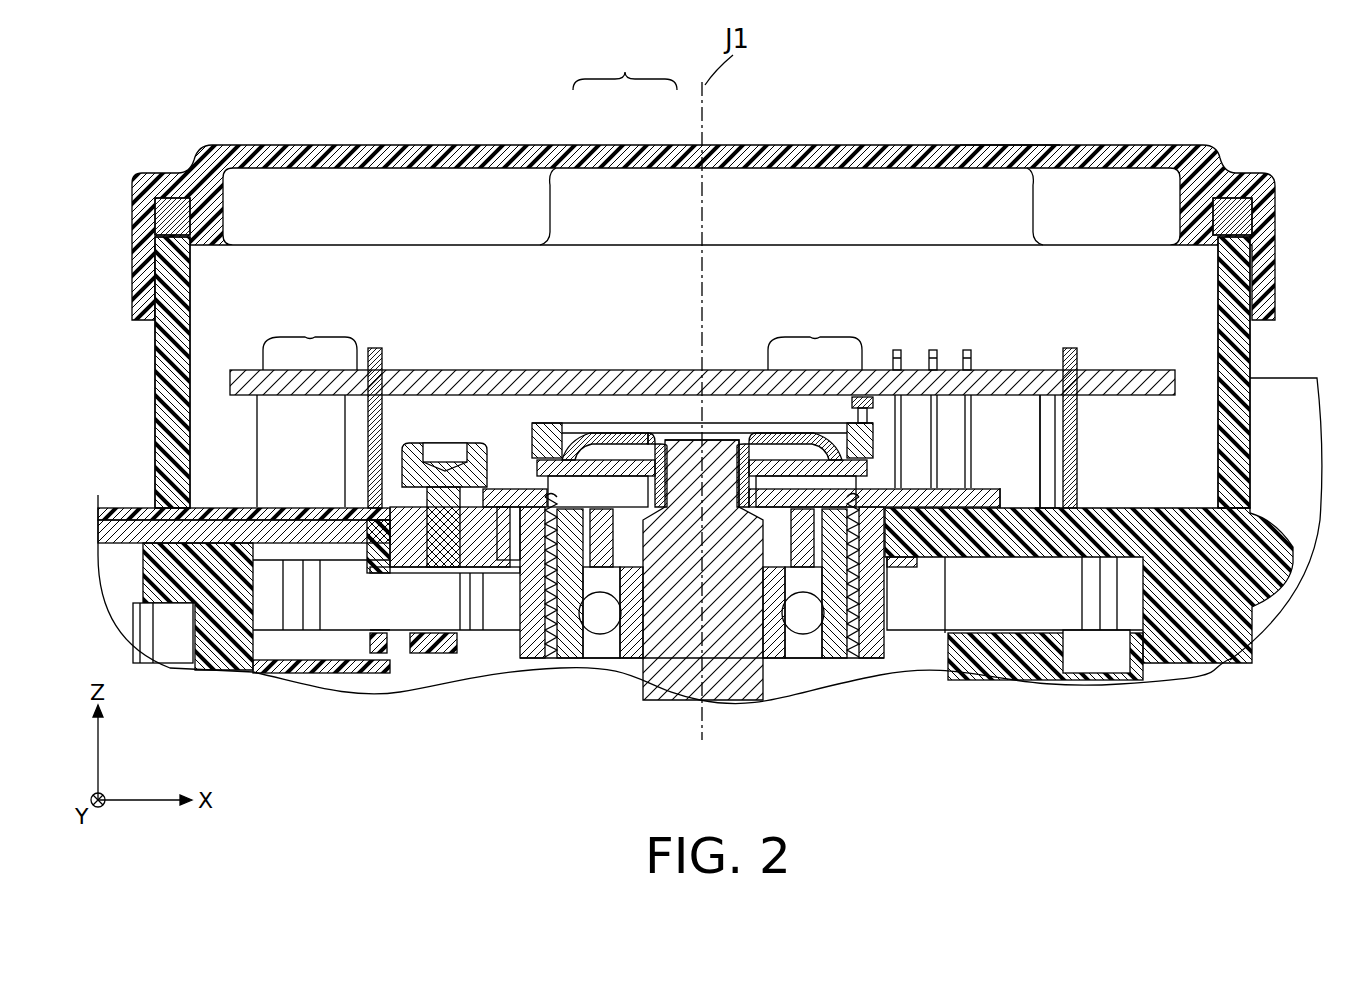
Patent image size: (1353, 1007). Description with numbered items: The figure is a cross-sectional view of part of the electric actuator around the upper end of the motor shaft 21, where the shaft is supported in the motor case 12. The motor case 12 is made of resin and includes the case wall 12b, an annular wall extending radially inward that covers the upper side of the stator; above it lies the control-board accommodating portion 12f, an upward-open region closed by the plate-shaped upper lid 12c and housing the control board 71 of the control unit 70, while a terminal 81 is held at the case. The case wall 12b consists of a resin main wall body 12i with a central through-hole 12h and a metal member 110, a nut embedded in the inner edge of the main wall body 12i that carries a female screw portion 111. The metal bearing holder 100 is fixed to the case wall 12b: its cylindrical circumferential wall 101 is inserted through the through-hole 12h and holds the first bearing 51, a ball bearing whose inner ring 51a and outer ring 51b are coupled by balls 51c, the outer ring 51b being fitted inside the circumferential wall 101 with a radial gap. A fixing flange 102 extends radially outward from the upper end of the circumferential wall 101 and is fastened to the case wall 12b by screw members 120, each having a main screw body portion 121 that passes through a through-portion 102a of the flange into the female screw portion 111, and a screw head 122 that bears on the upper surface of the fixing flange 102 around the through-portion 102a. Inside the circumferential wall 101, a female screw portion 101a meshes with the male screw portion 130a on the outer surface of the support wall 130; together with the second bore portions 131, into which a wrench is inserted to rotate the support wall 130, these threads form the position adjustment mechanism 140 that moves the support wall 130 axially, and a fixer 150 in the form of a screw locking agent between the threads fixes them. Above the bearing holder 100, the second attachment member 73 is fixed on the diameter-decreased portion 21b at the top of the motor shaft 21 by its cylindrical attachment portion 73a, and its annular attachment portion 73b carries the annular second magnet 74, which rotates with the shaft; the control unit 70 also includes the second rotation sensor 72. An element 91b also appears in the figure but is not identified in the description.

The motor case 12 is at (1213, 655).
The case wall 12b is at (1048, 600).
The upper lid 12c is at (1012, 150).
The control-board accommodating portion 12f is at (1225, 352).
The through-hole 12h is at (535, 565).
The main wall body 12i is at (1010, 610).
The motor shaft 21 is at (705, 665).
The diameter-decreased portion 21b is at (725, 440).
The first bearing 51 is at (590, 655).
The inner ring 51a is at (800, 625).
The outer ring 51b is at (832, 612).
The balls 51c is at (775, 615).
The control unit 70 is at (1128, 360).
The control board 71 is at (815, 455).
The second rotation sensor 72 is at (857, 495).
The second attachment member 73 is at (625, 63).
The cylindrical attachment portion 73a is at (660, 444).
The annular attachment portion 73b is at (606, 433).
The second magnet 74 is at (545, 423).
The terminal 81 is at (1075, 350).
The support post 91b is at (375, 350).
The bearing holder 100 is at (875, 603).
The circumferential wall 101 is at (540, 660).
The female screw portion 101a is at (550, 605).
The fixing flange 102 is at (945, 490).
The through-portion 102a is at (440, 443).
The metal member 110 is at (445, 530).
The female screw portion 111 is at (465, 600).
The screw member 120 is at (483, 487).
The main screw body portion 121 is at (432, 580).
The screw head 122 is at (398, 540).
The support wall 130 is at (797, 520).
The male screw portion 130a is at (862, 420).
The second bore portion 131 is at (567, 440).
The position adjustment mechanism 140 is at (1027, 563).
The fixer 150 is at (857, 568).